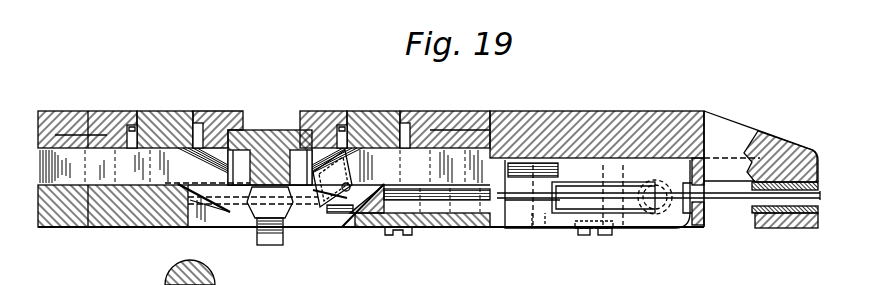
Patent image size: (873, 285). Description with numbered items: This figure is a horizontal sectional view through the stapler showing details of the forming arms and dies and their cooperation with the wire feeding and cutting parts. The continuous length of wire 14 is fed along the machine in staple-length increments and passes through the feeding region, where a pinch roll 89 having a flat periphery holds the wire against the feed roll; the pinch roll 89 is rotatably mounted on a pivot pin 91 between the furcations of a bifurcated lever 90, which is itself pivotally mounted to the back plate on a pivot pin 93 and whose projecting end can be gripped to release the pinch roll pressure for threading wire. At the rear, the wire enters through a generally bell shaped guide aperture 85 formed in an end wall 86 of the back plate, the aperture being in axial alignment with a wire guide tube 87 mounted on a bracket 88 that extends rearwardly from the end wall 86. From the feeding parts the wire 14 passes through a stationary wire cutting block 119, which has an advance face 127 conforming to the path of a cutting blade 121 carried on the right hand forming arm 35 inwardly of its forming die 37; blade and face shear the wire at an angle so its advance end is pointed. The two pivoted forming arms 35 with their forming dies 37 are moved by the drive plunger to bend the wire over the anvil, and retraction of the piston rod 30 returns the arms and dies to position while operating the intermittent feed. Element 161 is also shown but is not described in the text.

The retaining pin 161 is at (134, 127).
The forming arm 35 is at (200, 163).
The forming die 37 is at (241, 213).
The cutting blade 121 is at (318, 208).
The advance face 127 is at (350, 212).
The wire cutting block 119 is at (430, 226).
The bifurcated lever 90 is at (535, 229).
The pivot pin 93 is at (569, 208).
The pivot pin 91 is at (598, 236).
The pinch roll 89 is at (622, 186).
The wire 14 is at (735, 200).
The guide aperture 85 is at (710, 205).
The end wall 86 is at (695, 190).
The bracket 88 is at (800, 148).
The wire guide tube 87 is at (755, 212).
The piston rod 30 is at (204, 272).